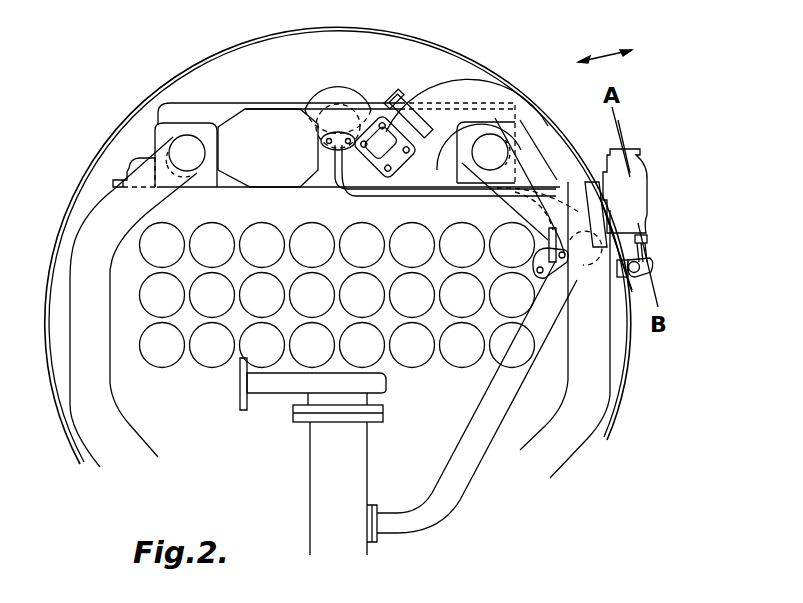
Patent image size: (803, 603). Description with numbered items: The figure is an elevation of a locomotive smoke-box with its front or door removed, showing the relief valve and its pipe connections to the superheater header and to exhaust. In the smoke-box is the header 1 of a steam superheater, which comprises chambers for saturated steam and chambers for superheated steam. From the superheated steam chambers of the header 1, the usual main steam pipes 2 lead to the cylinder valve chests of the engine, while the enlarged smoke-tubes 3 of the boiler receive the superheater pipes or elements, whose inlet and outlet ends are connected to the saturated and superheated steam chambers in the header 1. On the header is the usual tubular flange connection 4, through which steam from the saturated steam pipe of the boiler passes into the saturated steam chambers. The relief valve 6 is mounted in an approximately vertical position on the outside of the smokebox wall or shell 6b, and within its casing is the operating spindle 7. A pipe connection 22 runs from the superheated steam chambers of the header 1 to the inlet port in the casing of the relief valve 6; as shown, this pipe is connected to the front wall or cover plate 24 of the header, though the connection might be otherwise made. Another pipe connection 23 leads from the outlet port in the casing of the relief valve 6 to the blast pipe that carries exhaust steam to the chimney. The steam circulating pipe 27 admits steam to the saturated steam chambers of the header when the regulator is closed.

The header 1 is at (232, 111).
The main steam pipes 2 is at (105, 398).
The enlarged smoke-tubes 3 is at (258, 307).
The tubular flange connection 4 is at (358, 92).
The relief valve 6 is at (647, 176).
The smokebox wall or shell 6b is at (628, 384).
The operating spindle 7 is at (647, 255).
The pipe connection 22 is at (482, 90).
The pipe connection 23 is at (478, 442).
The front wall or cover plate 24 is at (268, 148).
The steam circulating pipe 27 is at (423, 198).